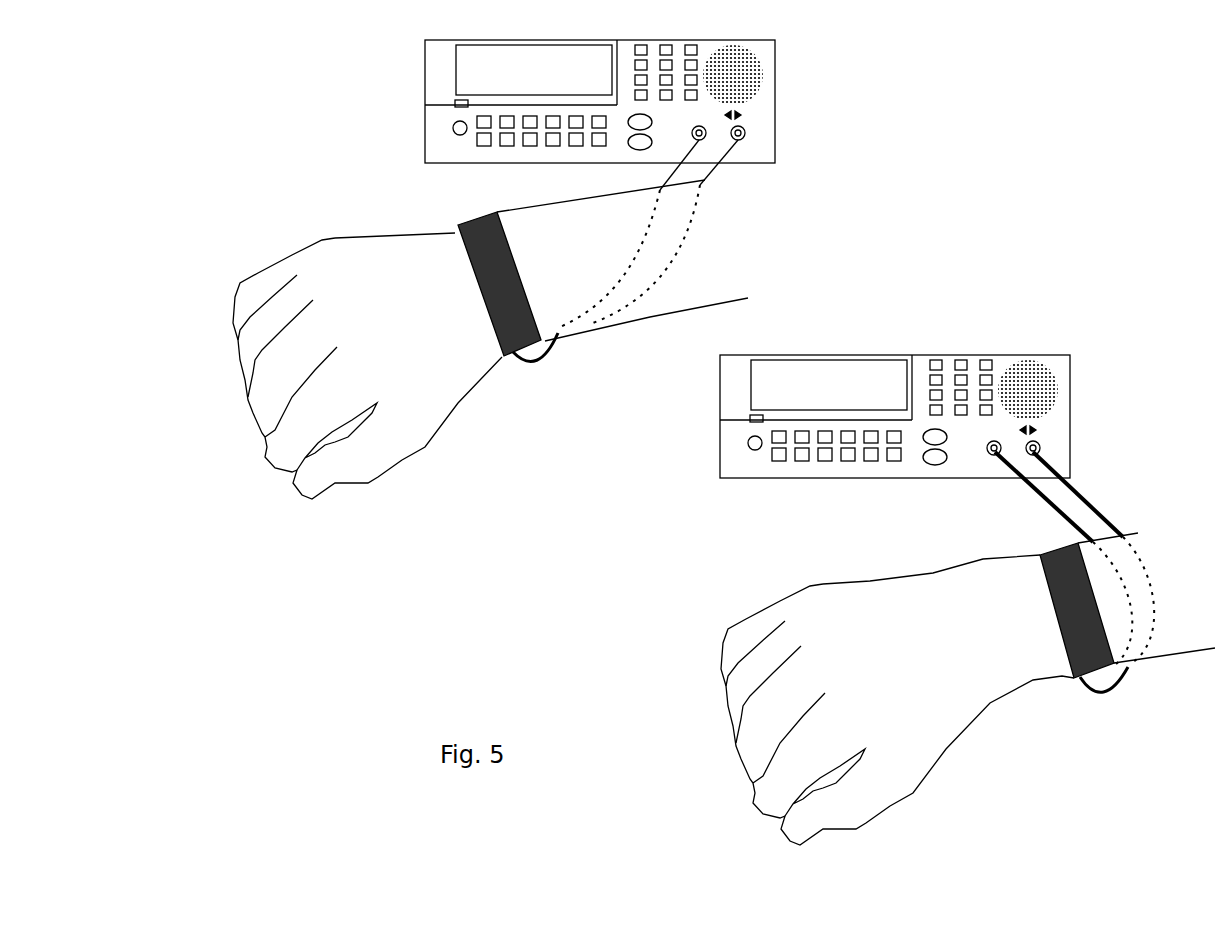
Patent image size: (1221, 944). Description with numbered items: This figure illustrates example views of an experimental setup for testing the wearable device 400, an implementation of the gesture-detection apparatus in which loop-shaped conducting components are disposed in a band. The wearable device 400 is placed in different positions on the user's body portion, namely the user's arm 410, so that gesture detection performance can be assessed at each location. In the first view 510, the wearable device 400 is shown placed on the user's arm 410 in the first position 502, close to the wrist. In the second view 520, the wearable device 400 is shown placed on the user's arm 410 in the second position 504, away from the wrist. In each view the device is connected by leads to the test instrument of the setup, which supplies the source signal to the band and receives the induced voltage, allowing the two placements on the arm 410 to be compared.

The wearable device 400 is at (490, 248).
The user's arm 410 is at (447, 360).
The Position 1 502 is at (515, 352).
The Position 2 504 is at (1078, 680).
The view 510 is at (825, 113).
The view 520 is at (1060, 333).